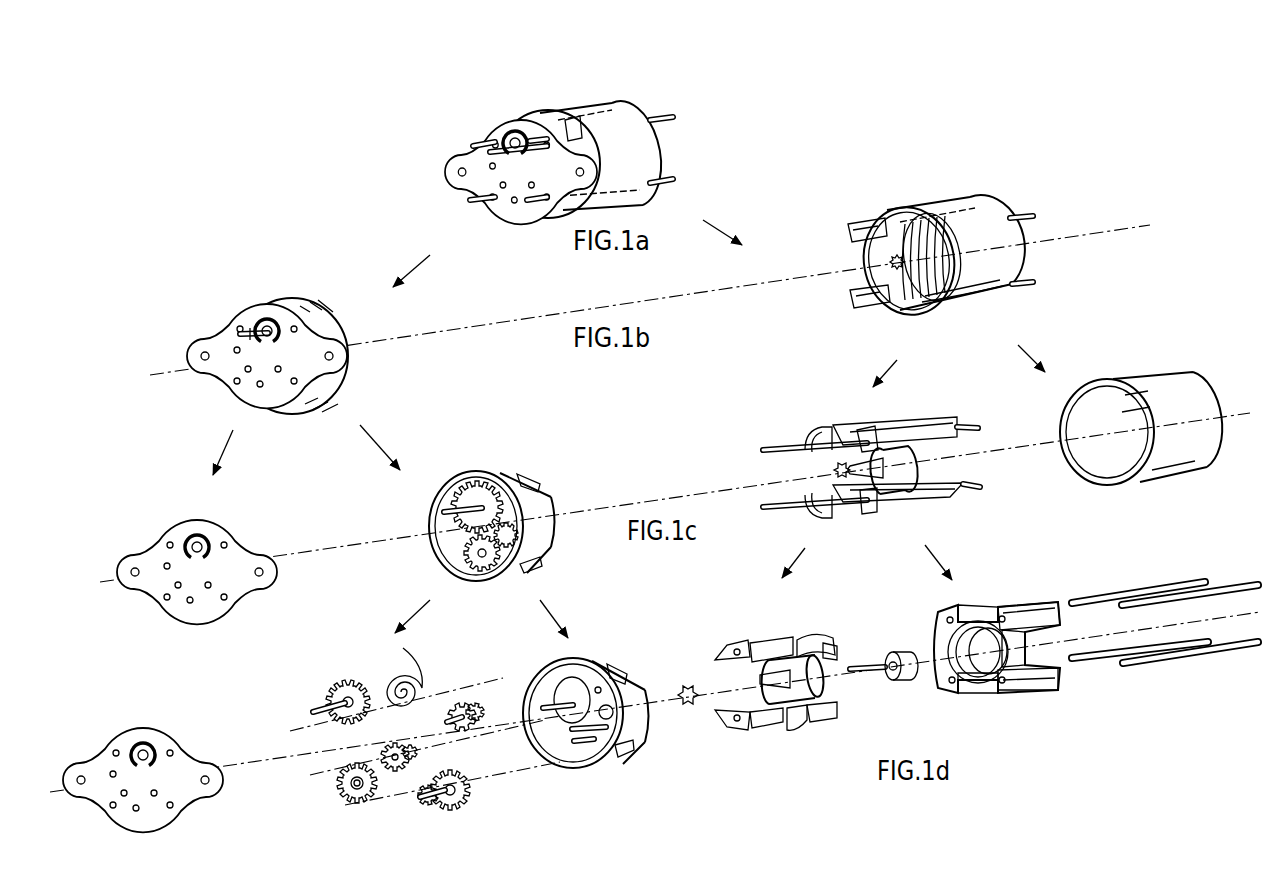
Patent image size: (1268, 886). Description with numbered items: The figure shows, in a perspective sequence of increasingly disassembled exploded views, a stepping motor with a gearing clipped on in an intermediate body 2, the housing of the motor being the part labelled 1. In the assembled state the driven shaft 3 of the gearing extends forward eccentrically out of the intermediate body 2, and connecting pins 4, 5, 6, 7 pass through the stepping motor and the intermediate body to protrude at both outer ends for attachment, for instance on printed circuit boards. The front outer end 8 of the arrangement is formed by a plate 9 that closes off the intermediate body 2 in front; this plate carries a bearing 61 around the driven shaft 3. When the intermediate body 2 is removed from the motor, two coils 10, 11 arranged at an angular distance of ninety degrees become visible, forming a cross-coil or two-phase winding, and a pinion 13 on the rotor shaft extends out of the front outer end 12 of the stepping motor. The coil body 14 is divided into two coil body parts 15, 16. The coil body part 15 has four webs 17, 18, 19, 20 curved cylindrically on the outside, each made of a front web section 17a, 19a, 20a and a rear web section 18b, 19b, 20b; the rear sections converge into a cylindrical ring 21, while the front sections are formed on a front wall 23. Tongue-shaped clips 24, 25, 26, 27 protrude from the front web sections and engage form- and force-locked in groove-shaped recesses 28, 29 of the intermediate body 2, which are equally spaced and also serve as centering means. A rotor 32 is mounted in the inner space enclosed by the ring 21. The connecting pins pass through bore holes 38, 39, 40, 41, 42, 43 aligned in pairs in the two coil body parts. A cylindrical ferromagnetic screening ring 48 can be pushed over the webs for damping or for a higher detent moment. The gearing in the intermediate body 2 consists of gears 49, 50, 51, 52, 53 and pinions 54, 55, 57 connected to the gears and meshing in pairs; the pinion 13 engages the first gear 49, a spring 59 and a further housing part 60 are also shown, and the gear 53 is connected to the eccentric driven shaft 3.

In FIG. 1A, the motor housing 1 is at (636, 110).
In FIG. 1B, the motor housing 1 is at (996, 212).
In FIG. 1A, the intermediate body 2 is at (556, 118).
In FIG. 1B, the intermediate body 2 is at (323, 320).
In FIG. 1C, the intermediate body 2 is at (495, 474).
In FIG. 1A, the driven shaft 3 is at (490, 158).
In FIG. 1B, the driven shaft 3 is at (240, 334).
In FIG. 1D, the driven shaft 3 is at (313, 712).
In FIG. 1A, the connecting pin 4 is at (473, 145).
In FIG. 1D, the connecting pin 4 is at (1114, 595).
In FIG. 1A, the connecting pin 5 is at (470, 201).
In FIG. 1D, the connecting pin 5 is at (1106, 654).
In FIG. 1A, the connecting pin 6 is at (674, 117).
In FIG. 1D, the connecting pin 6 is at (1246, 585).
In FIG. 1A, the connecting pin 7 is at (676, 180).
In FIG. 1D, the connecting pin 7 is at (1228, 650).
In FIG. 1A, the front outer end 8 is at (506, 222).
In FIG. 1A, the plate 9 is at (512, 131).
In FIG. 1C, the plate 9 is at (214, 530).
In FIG. 1D, the plate 9 is at (168, 742).
In FIG. 1B, the coil 10 is at (884, 218).
In FIG. 1B, the coil 11 is at (958, 300).
In FIG. 1B, the front outer end of the stepping motor 12 is at (893, 306).
In FIG. 1B, the pinion 13 is at (890, 264).
In FIG. 1C, the pinion 13 is at (835, 470).
In FIG. 1D, the pinion 13 is at (688, 685).
In FIG. 1C, the coil body 14 is at (908, 418).
In FIG. 1D, the coil body part 15 is at (1030, 639).
In FIG. 1D, the coil body part 16 is at (752, 670).
In FIG. 1C, the web 17 is at (828, 426).
In FIG. 1D, the front web section 17a is at (766, 645).
In FIG. 1C, the web 18 is at (830, 518).
In FIG. 1D, the rear web section 18b is at (988, 696).
In FIG. 1C, the web 19 is at (946, 424).
In FIG. 1D, the front web section 19a is at (836, 652).
In FIG. 1D, the rear web section 19b is at (1047, 616).
In FIG. 1C, the web 20 is at (943, 500).
In FIG. 1D, the front web section 20a is at (830, 722).
In FIG. 1D, the rear web section 20b is at (1048, 683).
In FIG. 1D, the cylindrical ring 21 is at (1028, 655).
In FIG. 1D, the front wall 23 is at (832, 692).
In FIG. 1D, the tongue-shaped clip 24 is at (722, 648).
In FIG. 1D, the tongue-shaped clip 25 is at (815, 646).
In FIG. 1D, the tongue-shaped clip 26 is at (792, 731).
In FIG. 1D, the tongue-shaped clip 27 is at (718, 728).
In FIG. 1C, the recess 28 is at (538, 488).
In FIG. 1D, the recess 28 is at (624, 673).
In FIG. 1C, the recess 29 is at (543, 567).
In FIG. 1D, the recess 29 is at (627, 760).
In FIG. 1D, the rotor 32 is at (898, 684).
In FIG. 1D, the bore hole 38 is at (752, 645).
In FIG. 1D, the bore hole 39 is at (754, 730).
In FIG. 1D, the bore hole 40 is at (942, 616).
In FIG. 1D, the bore hole 41 is at (1006, 612).
In FIG. 1D, the bore hole 42 is at (1008, 688).
In FIG. 1D, the bore hole 43 is at (950, 690).
In FIG. 1C, the screening ring 48 is at (1165, 385).
In FIG. 1C, the first gear 49 is at (508, 577).
In FIG. 1D, the first gear 49 is at (476, 703).
In FIG. 1D, the gear 50 is at (468, 800).
In FIG. 1D, the gear 51 is at (345, 798).
In FIG. 1D, the gear 52 is at (381, 757).
In FIG. 1D, the gear 53 is at (343, 688).
In FIG. 1D, the pinion 54 is at (459, 703).
In FIG. 1D, the pinion 55 is at (422, 806).
In FIG. 1D, the pinion 57 is at (410, 745).
In FIG. 1D, the spiral spring 59 is at (415, 676).
In FIG. 1D, the gear housing 60 is at (573, 662).
In FIG. 1B, the bearing 61 is at (265, 318).
In FIG. 1C, the bearing 61 is at (190, 535).
In FIG. 1D, the bearing 61 is at (137, 744).